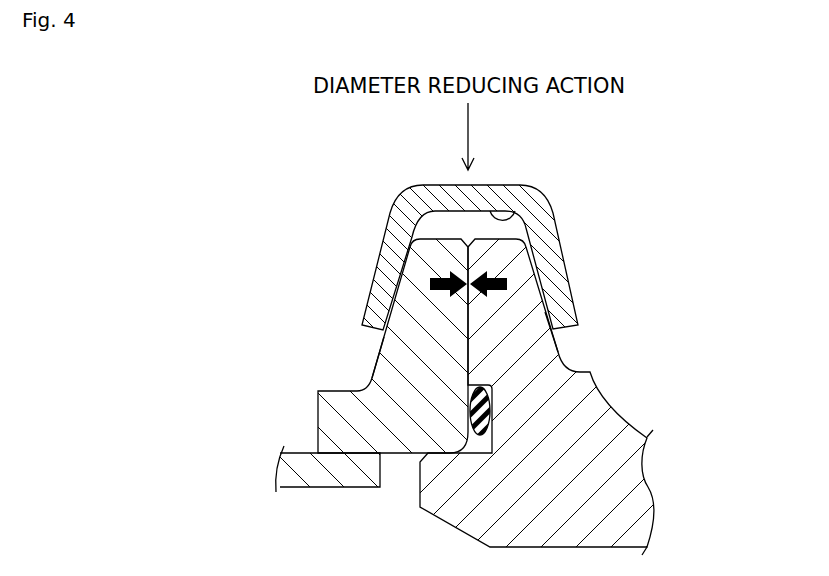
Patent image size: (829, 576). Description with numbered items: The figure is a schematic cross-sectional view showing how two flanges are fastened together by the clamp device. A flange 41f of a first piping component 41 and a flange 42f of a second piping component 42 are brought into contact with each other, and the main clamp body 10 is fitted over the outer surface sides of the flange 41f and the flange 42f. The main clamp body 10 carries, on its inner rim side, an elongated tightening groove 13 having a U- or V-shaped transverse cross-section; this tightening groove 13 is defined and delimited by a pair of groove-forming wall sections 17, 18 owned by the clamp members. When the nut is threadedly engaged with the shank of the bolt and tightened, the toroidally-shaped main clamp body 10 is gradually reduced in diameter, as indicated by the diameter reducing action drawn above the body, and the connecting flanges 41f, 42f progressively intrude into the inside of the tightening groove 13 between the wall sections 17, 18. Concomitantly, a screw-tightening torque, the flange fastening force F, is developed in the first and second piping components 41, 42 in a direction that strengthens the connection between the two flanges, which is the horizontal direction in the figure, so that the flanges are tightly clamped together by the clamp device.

The main clamp body 10 is at (438, 188).
The tightening groove 13 is at (505, 225).
The groove-forming wall section 17 is at (376, 298).
The groove-forming wall section 18 is at (562, 306).
The first piping component 41 is at (390, 364).
The flange of first piping component 41f is at (395, 346).
The second piping component 42 is at (456, 396).
The flange of second piping component 42f is at (543, 346).
The flange fastening force F is at (447, 277).